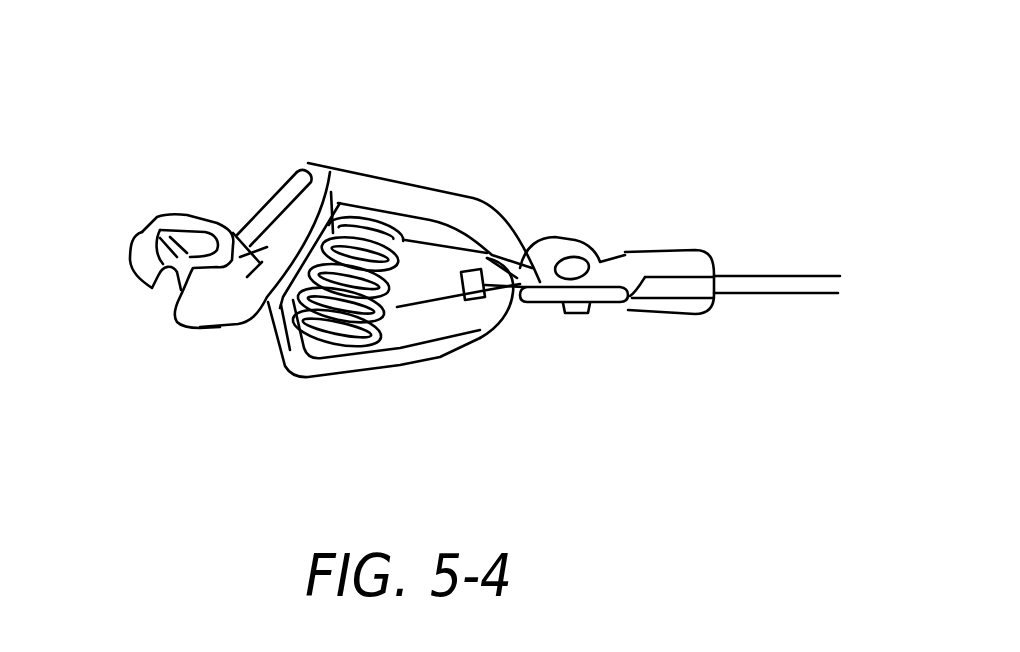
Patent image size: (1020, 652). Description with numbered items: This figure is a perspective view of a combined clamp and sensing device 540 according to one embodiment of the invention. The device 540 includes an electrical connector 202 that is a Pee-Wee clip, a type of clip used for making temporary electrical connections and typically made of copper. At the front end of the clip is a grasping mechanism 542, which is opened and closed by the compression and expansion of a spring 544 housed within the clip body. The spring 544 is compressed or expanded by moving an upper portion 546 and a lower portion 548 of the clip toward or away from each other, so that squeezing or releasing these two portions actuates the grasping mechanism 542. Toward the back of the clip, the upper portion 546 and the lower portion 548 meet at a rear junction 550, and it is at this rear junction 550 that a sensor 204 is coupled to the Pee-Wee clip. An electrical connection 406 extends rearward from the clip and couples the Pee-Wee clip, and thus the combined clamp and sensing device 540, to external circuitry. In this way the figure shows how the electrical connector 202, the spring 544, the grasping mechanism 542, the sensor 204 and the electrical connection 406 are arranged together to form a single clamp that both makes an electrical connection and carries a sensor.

The combined clamp and sensing device 540 is at (540, 128).
The grasping mechanism 542 is at (153, 288).
The spring 544 is at (313, 165).
The upper portion 546 is at (368, 182).
The lower portion 548 is at (397, 358).
The rear junction 550 is at (519, 282).
The sensor 204 is at (471, 300).
The electrical connector 202 is at (333, 387).
The electrical connection 406 is at (783, 291).